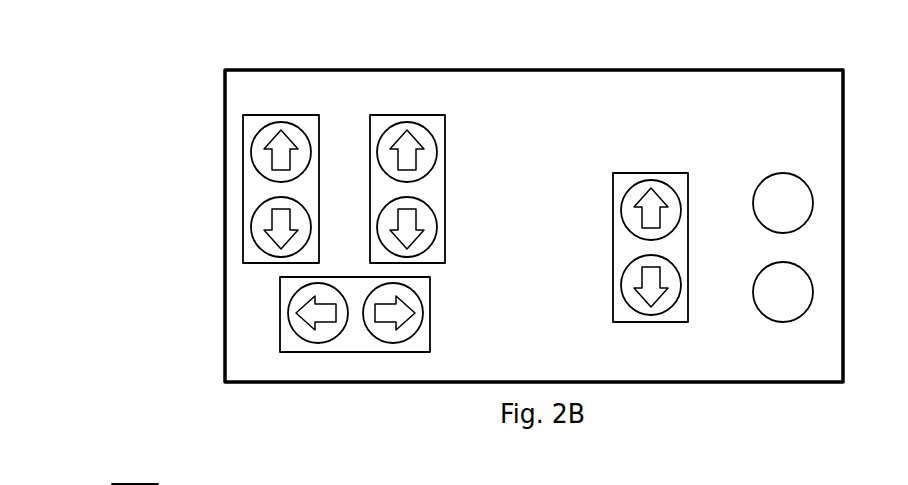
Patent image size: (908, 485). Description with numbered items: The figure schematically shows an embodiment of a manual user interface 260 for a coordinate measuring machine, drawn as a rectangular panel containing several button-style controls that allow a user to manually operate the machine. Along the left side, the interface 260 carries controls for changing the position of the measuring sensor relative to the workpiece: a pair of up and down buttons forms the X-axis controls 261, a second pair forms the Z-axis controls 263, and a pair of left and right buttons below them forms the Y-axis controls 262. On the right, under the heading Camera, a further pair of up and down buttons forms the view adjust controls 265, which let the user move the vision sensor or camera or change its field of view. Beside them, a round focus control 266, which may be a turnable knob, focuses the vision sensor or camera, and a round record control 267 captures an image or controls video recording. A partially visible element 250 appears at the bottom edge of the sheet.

The display screen 250 is at (109, 478).
The manual user interface 260 is at (352, 35).
The X-axis controls 261 is at (243, 192).
The Y-axis controls 262 is at (279, 320).
The Z-axis controls 263 is at (446, 147).
The view adjust controls 265 is at (612, 208).
The focus control 266 is at (814, 205).
The record control 267 is at (813, 300).